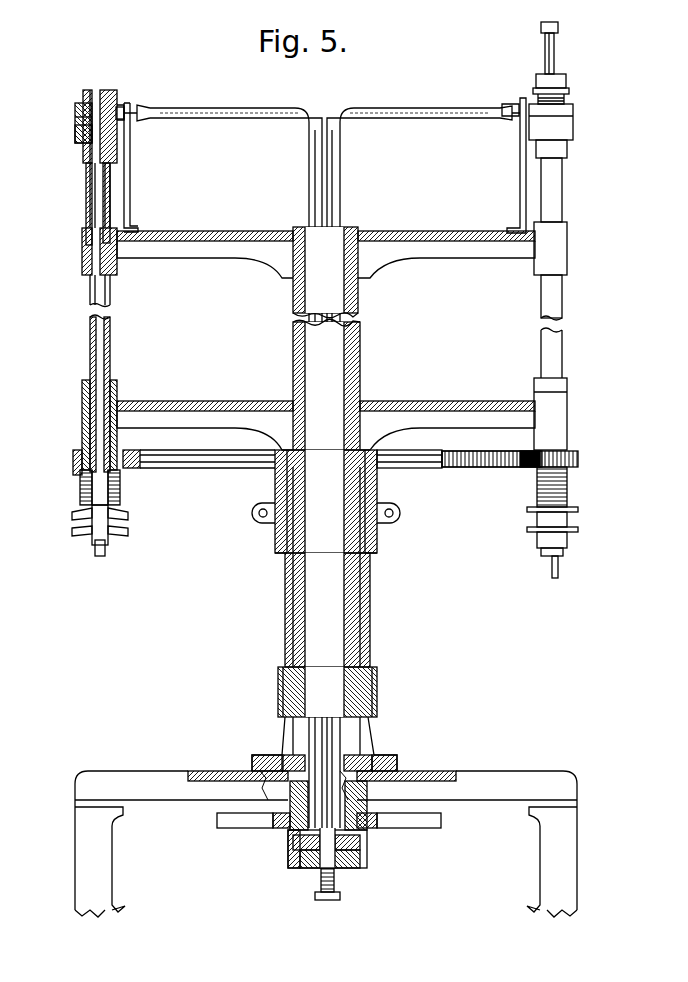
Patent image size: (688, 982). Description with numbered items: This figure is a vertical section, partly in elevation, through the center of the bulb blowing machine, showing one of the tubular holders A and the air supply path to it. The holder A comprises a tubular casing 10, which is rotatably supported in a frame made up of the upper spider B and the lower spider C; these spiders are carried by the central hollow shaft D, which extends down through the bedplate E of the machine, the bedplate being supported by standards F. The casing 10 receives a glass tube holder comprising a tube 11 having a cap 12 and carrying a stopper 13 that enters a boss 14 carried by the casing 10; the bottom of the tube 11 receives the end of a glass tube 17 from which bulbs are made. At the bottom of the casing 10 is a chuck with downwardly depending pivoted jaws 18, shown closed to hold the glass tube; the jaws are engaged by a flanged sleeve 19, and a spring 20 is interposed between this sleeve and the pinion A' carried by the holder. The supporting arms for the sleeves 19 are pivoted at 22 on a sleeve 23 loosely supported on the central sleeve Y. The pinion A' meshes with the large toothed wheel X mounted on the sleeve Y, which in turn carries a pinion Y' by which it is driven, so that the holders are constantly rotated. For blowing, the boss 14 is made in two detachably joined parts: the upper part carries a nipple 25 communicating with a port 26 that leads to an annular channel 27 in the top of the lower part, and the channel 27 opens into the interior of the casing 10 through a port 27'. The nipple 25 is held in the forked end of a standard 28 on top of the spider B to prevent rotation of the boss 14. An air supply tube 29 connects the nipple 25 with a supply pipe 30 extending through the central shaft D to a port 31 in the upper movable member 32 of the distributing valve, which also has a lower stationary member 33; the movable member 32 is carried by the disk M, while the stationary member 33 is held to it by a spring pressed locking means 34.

The tubular casing 10 is at (110, 346).
The tube 11 is at (555, 58).
The cap 12 is at (559, 26).
The stopper 13 is at (568, 82).
The boss 14 is at (90, 92).
The glass tube 17 is at (558, 576).
The pivoted jaws 18 is at (104, 552).
The sleeve 19 is at (122, 522).
The spring 20 is at (120, 487).
The pivot 22 is at (258, 524).
The sleeve 23 is at (392, 522).
The nipple 25 is at (140, 118).
The port 26 is at (116, 98).
The annular channel 27 is at (65, 121).
The port 27' is at (64, 142).
The standard 28 is at (128, 178).
The air supply tube 29 is at (246, 108).
The supply pipe 30 is at (311, 183).
The port 31 is at (288, 840).
The upper movable member 32 is at (367, 840).
The lower stationary member 33 is at (367, 862).
The spring pressed locking means 34 is at (334, 884).
The tubular holder A is at (322, 270).
The pinion A' is at (322, 459).
The upper spider B is at (212, 230).
The lower spider C is at (202, 400).
The central hollow shaft D is at (362, 370).
The bedplate E is at (476, 770).
The standards F is at (578, 848).
The disk M is at (436, 828).
The toothed wheel X is at (462, 470).
The sleeve Y is at (345, 610).
The pinion Y' is at (335, 719).